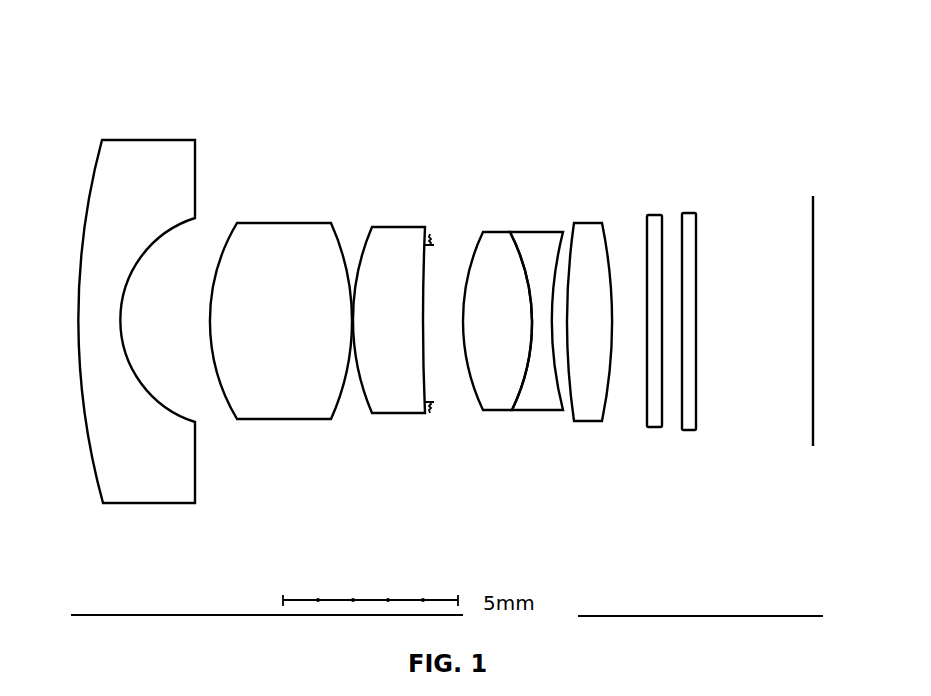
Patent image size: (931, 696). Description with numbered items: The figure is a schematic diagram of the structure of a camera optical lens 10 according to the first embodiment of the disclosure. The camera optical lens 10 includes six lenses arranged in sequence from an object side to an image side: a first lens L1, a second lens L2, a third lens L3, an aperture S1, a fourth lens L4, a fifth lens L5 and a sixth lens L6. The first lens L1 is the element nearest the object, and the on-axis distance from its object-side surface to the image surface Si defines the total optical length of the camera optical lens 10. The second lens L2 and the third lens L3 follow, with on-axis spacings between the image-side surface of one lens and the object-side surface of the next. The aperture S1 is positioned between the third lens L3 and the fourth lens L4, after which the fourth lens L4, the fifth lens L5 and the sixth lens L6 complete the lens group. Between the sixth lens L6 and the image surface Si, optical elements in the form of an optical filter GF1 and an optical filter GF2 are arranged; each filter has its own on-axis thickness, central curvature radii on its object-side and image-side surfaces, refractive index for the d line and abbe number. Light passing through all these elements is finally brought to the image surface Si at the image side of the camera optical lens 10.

The camera optical lens 10 is at (470, 30).
The first lens L1 is at (136, 304).
The second lens L2 is at (281, 303).
The third lens L3 is at (389, 306).
The aperture S1 is at (439, 309).
The fourth lens L4 is at (497, 304).
The fifth lens L5 is at (536, 304).
The sixth lens L6 is at (589, 304).
The optical filter GF1 is at (659, 306).
The optical filter GF2 is at (705, 304).
The image surface Si is at (815, 304).